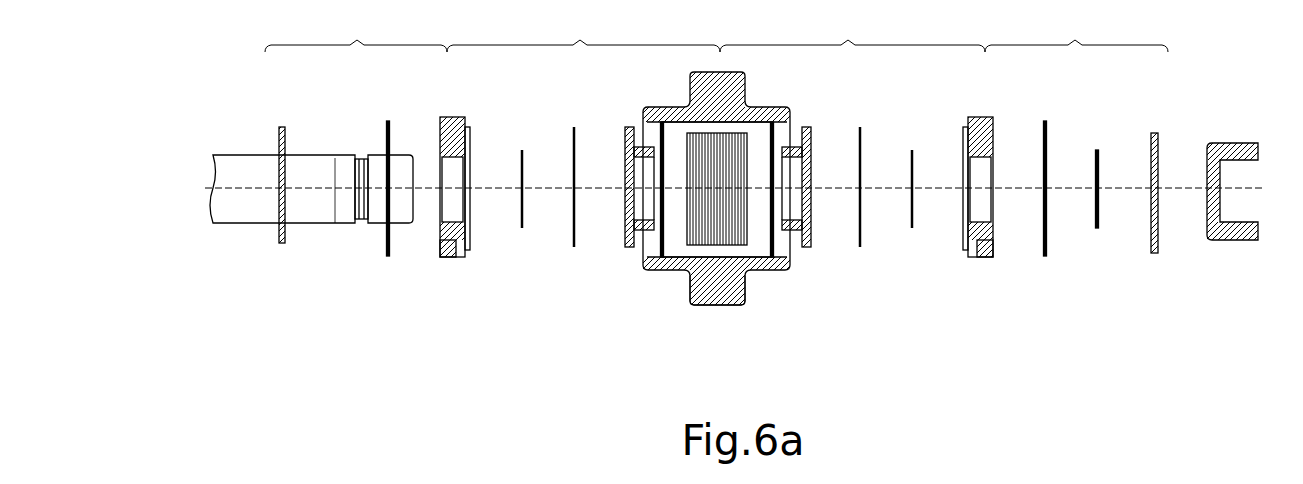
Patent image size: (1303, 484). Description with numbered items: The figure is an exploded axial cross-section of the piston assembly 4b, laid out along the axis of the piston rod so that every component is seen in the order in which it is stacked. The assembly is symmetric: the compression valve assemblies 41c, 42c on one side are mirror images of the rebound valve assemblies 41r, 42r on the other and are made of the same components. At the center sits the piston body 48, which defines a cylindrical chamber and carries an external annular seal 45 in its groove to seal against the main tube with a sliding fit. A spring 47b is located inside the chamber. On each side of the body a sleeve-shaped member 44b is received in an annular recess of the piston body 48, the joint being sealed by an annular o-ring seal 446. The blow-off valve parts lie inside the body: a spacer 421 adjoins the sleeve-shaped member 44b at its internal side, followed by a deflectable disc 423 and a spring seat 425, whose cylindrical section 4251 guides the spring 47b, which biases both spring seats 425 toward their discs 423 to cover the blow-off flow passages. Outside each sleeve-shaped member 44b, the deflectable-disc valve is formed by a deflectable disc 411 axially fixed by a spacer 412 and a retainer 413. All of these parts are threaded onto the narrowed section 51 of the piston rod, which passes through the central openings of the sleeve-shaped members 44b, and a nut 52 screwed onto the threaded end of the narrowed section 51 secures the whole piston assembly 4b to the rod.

The narrowed section of the piston rod 51 is at (250, 200).
The retainer 413 is at (282, 243).
The spacer 412 is at (335, 223).
The deflectable disc 411 is at (388, 256).
The sleeve-shaped member 44b is at (443, 262).
The annular o-ring seal 446 is at (450, 260).
The spacer 421 is at (522, 228).
The deflectable disc 423 is at (574, 247).
The spring seat 425 is at (630, 247).
The cylindrical section 4251 is at (648, 240).
The spring 47b is at (692, 262).
The external annular seal 45 is at (727, 305).
The piston body 48 is at (732, 305).
The nut 52 is at (1225, 240).
The piston assembly 4b is at (1247, 258).
The compression valve assembly 41c is at (356, 34).
The rebound valve assembly 42r is at (583, 34).
The compression valve assembly 42c is at (852, 34).
The rebound valve assembly 41r is at (1076, 34).